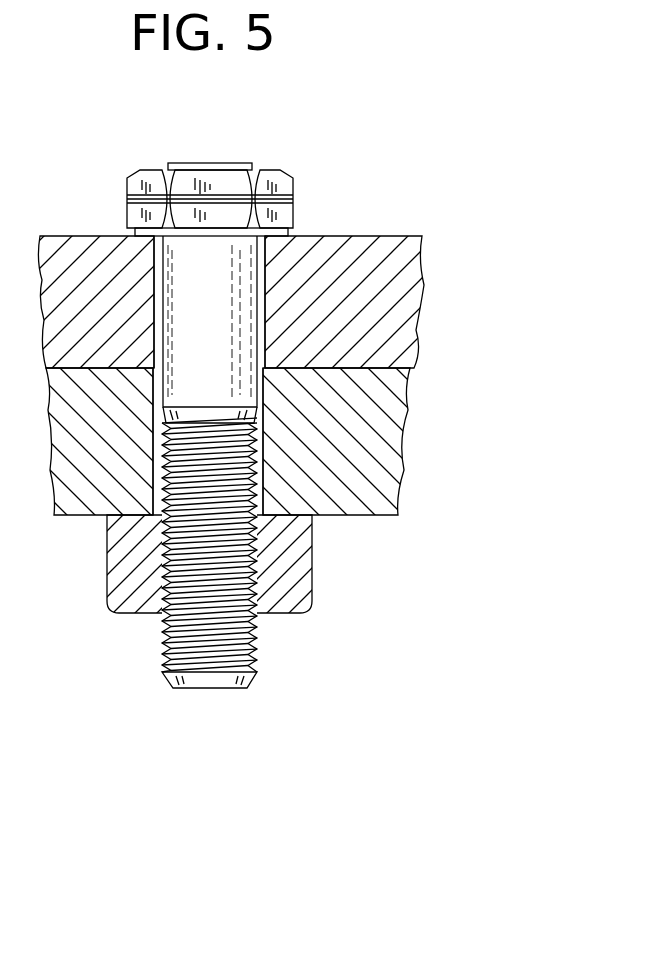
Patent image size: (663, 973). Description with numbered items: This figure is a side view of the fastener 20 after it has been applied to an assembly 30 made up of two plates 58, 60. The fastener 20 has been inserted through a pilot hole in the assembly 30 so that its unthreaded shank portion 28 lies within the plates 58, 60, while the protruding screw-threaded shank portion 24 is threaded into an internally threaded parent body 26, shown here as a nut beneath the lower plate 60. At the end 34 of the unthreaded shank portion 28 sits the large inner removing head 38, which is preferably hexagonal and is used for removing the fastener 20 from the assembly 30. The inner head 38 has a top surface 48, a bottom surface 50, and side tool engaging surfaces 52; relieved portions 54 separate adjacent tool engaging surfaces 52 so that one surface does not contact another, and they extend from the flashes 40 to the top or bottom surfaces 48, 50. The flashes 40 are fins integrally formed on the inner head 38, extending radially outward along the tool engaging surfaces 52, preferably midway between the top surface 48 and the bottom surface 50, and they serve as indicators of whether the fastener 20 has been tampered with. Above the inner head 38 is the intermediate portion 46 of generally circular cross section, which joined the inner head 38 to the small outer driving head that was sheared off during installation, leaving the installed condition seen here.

The fastener 20 is at (218, 441).
The screw-threaded shank portion 24 is at (267, 435).
The parent body 26 is at (313, 576).
The unthreaded shank portion 28 is at (240, 305).
The assembly 30 is at (260, 349).
The end of the unthreaded shank portion 34 is at (268, 246).
The large inner removing head 38 is at (191, 167).
The flashes 40 is at (175, 181).
The intermediate portion 46 is at (233, 162).
The top surface 48 is at (260, 168).
The bottom surface 50 is at (134, 233).
The side tool engaging surfaces 52 is at (148, 180).
The relieved portions 54 is at (167, 172).
The plate 58 is at (386, 252).
The plate 60 is at (368, 456).